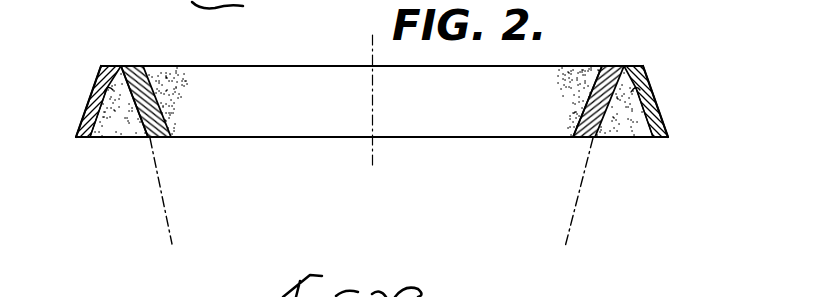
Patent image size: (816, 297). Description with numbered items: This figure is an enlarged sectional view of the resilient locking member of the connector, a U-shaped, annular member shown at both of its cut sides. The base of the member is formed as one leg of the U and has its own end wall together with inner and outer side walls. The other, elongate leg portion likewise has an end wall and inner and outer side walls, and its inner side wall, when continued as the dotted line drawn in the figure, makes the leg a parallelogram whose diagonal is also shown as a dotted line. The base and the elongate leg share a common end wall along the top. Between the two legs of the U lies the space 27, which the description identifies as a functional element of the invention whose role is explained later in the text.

The space between the U-shaped legs 27 is at (100, 138).